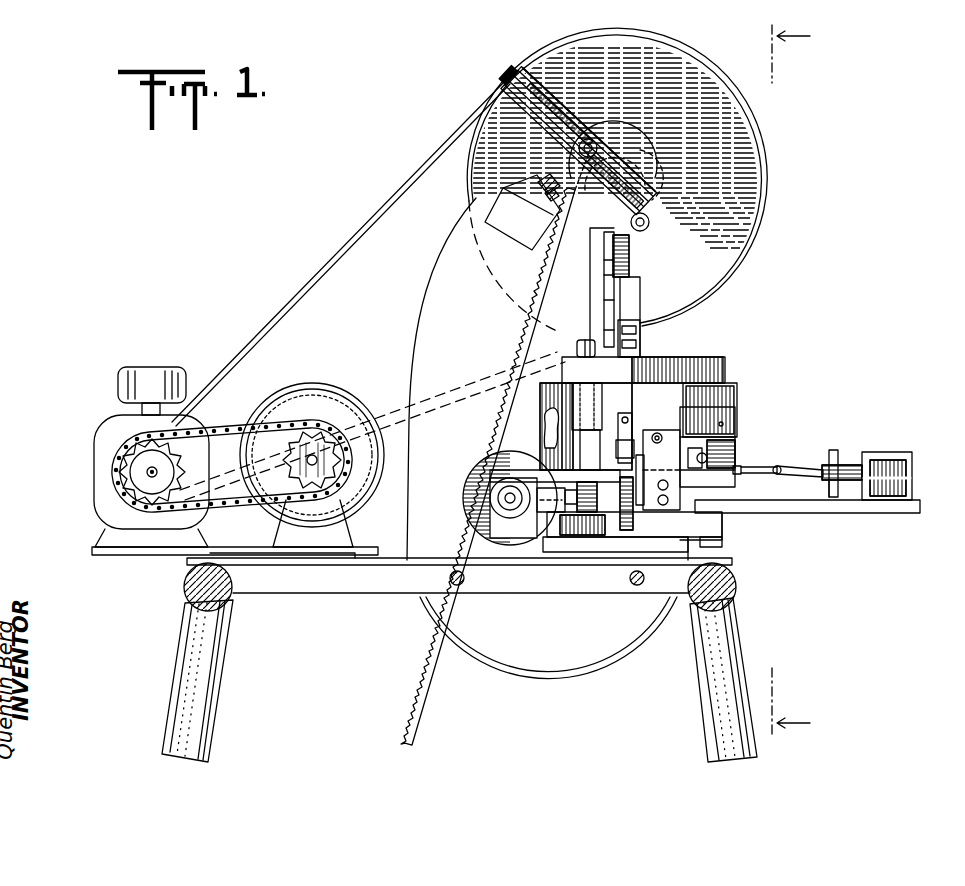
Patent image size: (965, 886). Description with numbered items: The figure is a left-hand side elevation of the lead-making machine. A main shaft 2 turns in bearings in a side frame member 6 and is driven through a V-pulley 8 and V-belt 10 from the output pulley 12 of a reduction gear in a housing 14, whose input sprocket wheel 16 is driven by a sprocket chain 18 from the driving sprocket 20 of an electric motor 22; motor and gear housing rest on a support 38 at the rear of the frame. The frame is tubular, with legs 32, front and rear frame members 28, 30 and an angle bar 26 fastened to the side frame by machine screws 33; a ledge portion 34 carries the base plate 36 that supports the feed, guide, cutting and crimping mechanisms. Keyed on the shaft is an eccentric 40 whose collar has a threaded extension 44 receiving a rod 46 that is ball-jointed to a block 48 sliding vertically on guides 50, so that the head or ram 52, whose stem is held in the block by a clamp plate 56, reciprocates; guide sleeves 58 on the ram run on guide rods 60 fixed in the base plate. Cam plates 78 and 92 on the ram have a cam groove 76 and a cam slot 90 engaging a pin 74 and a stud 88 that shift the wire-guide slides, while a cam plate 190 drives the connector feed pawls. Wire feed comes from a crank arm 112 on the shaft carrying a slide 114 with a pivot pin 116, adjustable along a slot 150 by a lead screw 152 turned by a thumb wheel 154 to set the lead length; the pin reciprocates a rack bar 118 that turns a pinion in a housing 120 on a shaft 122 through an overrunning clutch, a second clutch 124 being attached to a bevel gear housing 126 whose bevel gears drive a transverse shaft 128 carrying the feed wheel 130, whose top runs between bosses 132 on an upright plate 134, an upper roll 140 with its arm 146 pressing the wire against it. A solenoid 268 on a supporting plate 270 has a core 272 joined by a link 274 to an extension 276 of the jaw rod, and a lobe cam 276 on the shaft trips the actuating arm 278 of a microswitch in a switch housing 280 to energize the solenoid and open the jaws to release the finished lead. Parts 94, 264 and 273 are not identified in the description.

The main shaft 2 is at (650, 188).
The side frame member 6 is at (412, 312).
The V-pulley 8 is at (680, 72).
The V-belt 10 is at (334, 254).
The output pulley 12 is at (122, 458).
The housing 14 is at (100, 512).
The sprocket wheel 16 is at (180, 445).
The sprocket chain 18 is at (228, 503).
The driving sprocket 20 is at (306, 452).
The electric motor 22 is at (340, 405).
The angle bar 26 is at (333, 594).
The front frame member 28 is at (737, 590).
The rear frame member 30 is at (190, 588).
The legs 32 is at (178, 704).
The machine screws 33 is at (449, 578).
The ledge portion 34 is at (662, 540).
The base plate 36 is at (724, 525).
The support 38 is at (120, 555).
The eccentric 40 is at (645, 150).
The internally threaded extension 44 is at (650, 221).
The rod 46 is at (631, 252).
The block 48 is at (641, 292).
The guides 50 is at (603, 298).
The reciprocating head or ram 52 is at (705, 360).
The clamp plate 56 is at (641, 330).
The guide sleeves 58 is at (582, 380).
The guide rods 60 is at (586, 340).
The cylindrical stud or pin 74 is at (545, 470).
The cam groove 76 is at (552, 418).
The cam plate 78 is at (556, 392).
The pin or stud 88 is at (702, 464).
The cam slot 90 is at (707, 440).
The cam plate 92 is at (730, 440).
The pin 94 is at (736, 475).
The crank arm 112 is at (588, 98).
The slide 114 is at (622, 152).
The crank pin or pivot pin 116 is at (588, 137).
The rack bar 118 is at (525, 312).
The housing 120 is at (478, 465).
The shaft 122 is at (500, 490).
The overrunning clutch 124 is at (495, 502).
The bevel gear housing 126 is at (493, 518).
The transverse shaft 128 is at (570, 510).
The feed wheel or roll 130 is at (633, 520).
The bosses 132 is at (632, 470).
The upright plate 134 is at (600, 540).
The upper roll 140 is at (630, 445).
The arm 146 is at (622, 430).
The slot 150 is at (548, 94).
The lead screw 152 is at (540, 118).
The milled thumb wheel 154 is at (508, 72).
The cam plate 190 is at (630, 372).
The link rod 264 is at (750, 466).
The solenoid 268 is at (895, 470).
The supporting plate 270 is at (848, 512).
The core 272 is at (842, 466).
The lever arm 273 is at (828, 490).
The link 274 is at (800, 466).
The lobe cam 276 is at (655, 174).
The actuating arm 278 is at (556, 150).
The switch housing 280 is at (484, 255).